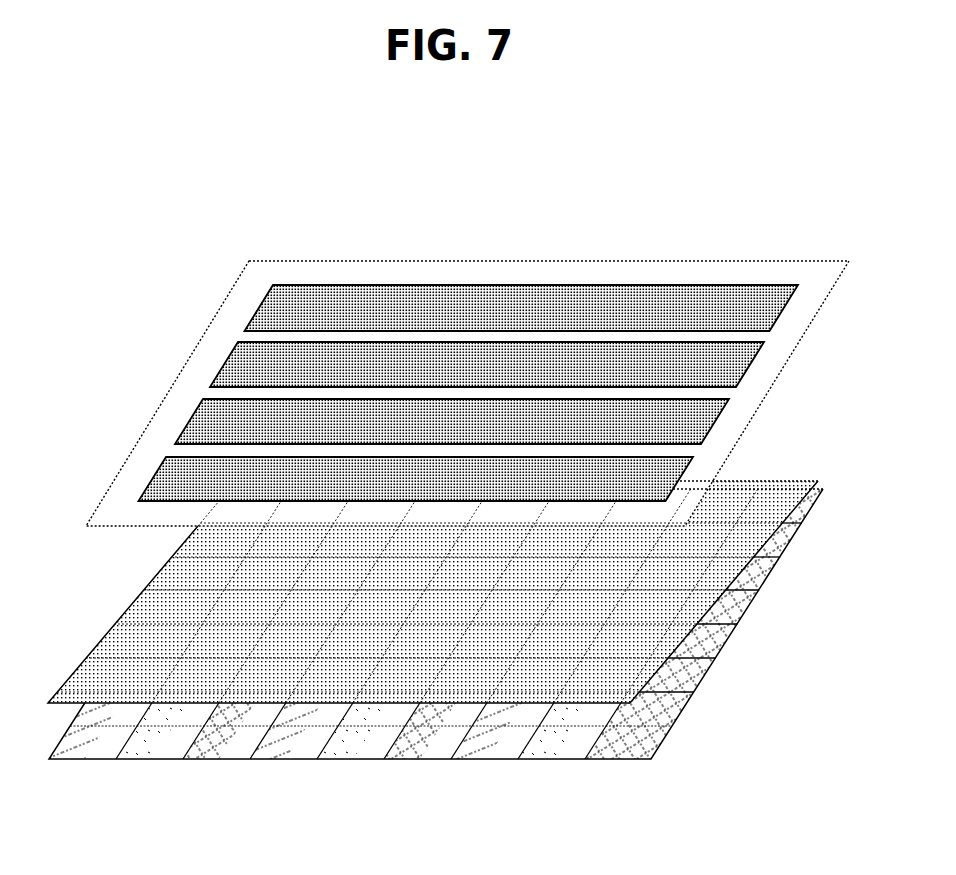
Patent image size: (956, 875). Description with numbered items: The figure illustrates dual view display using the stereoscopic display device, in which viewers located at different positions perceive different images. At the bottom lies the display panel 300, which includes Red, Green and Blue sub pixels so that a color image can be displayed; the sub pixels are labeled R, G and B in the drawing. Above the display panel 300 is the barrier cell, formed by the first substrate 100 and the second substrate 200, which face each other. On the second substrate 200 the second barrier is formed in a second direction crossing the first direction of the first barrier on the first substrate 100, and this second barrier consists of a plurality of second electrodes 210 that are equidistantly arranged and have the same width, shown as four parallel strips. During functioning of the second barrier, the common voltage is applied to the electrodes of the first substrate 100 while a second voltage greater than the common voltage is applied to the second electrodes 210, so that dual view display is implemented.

The first substrate 100 is at (803, 466).
The second substrate 200 is at (700, 261).
The second electrodes 210 is at (502, 298).
The display panel 300 is at (249, 790).